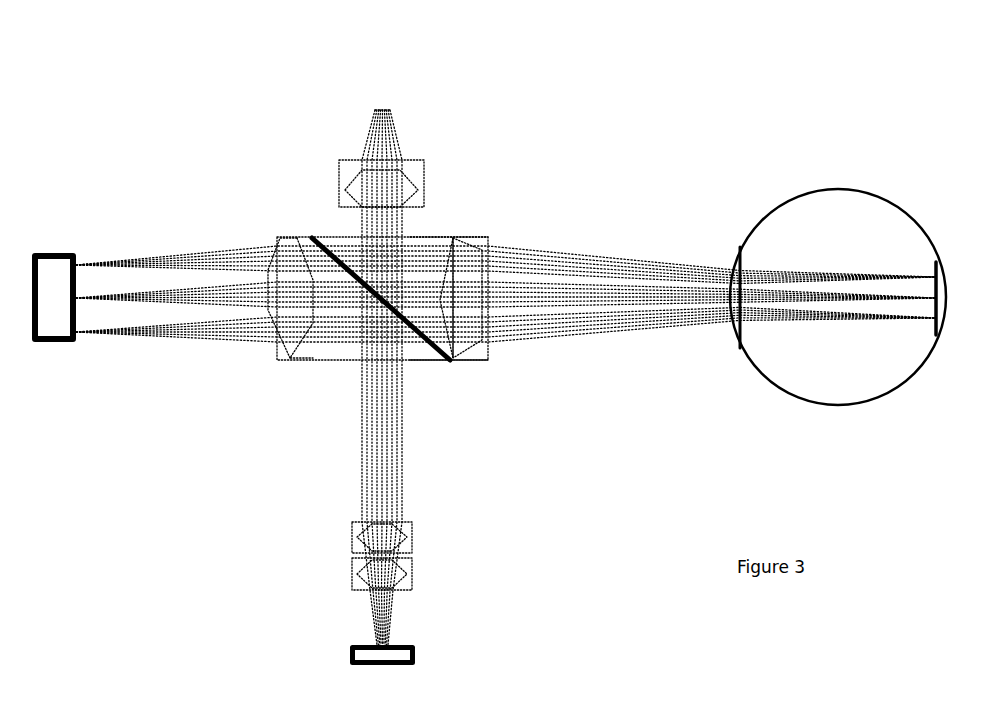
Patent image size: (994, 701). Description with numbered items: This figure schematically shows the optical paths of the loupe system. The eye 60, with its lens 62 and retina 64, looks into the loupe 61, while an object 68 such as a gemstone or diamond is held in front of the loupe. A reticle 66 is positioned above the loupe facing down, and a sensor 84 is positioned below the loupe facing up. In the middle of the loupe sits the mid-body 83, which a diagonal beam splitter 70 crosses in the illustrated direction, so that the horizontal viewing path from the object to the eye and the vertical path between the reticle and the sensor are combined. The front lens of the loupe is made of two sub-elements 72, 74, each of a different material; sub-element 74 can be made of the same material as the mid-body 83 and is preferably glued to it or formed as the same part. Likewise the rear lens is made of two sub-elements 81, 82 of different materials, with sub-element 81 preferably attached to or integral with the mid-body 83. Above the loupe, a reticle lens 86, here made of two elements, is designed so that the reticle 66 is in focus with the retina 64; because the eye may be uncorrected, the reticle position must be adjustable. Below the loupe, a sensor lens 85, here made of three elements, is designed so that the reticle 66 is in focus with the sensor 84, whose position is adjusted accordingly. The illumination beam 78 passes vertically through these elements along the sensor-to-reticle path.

The eye 60 is at (890, 202).
The loupe 61 is at (257, 317).
The lens 62 is at (740, 305).
The retina 64 is at (935, 329).
The reticle 66 is at (387, 107).
The object 68 is at (38, 253).
The beam splitter 70 is at (332, 238).
The sub-element 72 is at (282, 340).
The sub-element 74 is at (303, 340).
The illumination beam 78 is at (393, 385).
The sub-element 81 is at (465, 325).
The sub-element 82 is at (483, 325).
The mid-body 83 is at (450, 212).
The sensor 84 is at (415, 654).
The sensor lens 85 is at (420, 553).
The reticle lens 86 is at (423, 163).